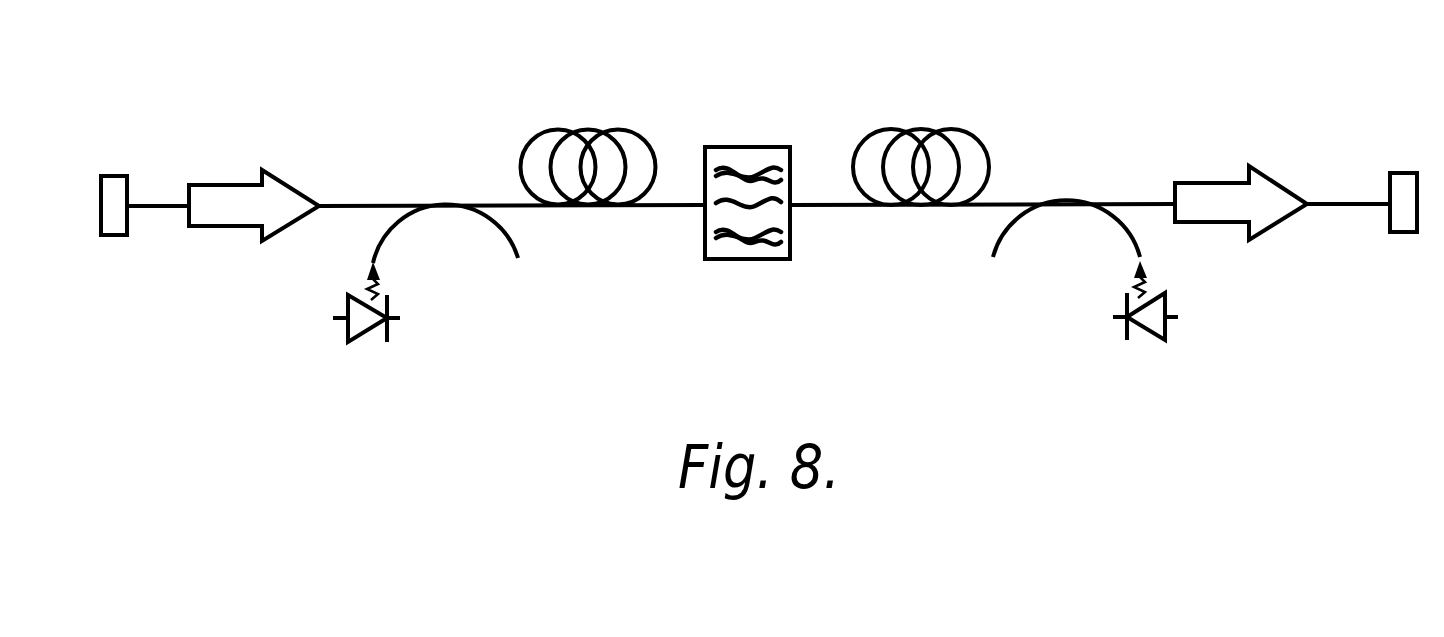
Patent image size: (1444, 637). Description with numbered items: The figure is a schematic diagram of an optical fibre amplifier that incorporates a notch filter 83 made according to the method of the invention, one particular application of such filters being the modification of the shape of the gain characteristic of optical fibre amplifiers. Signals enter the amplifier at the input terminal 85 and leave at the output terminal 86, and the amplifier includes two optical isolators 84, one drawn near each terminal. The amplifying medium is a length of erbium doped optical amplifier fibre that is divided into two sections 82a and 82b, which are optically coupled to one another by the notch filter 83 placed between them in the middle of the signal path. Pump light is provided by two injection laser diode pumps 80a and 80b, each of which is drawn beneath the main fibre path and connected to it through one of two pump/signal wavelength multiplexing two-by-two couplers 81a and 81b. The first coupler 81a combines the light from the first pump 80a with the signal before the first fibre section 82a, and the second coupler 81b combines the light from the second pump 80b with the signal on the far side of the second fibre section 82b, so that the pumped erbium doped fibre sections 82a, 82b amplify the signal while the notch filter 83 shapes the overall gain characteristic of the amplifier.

The injection laser diode pump 80a is at (357, 330).
The injection laser diode pump 80b is at (1163, 328).
The pump/signal wavelength multiplexing 2×2 coupler 81a is at (442, 206).
The pump/signal wavelength multiplexing 2×2 coupler 81b is at (1072, 204).
The erbium doped optical amplifier fibre section 82a is at (523, 153).
The erbium doped optical amplifier fibre section 82b is at (982, 140).
The notch filter 83 is at (733, 158).
The optical isolator 84 is at (255, 213).
The input terminal 85 is at (112, 198).
The output terminal 86 is at (1400, 192).